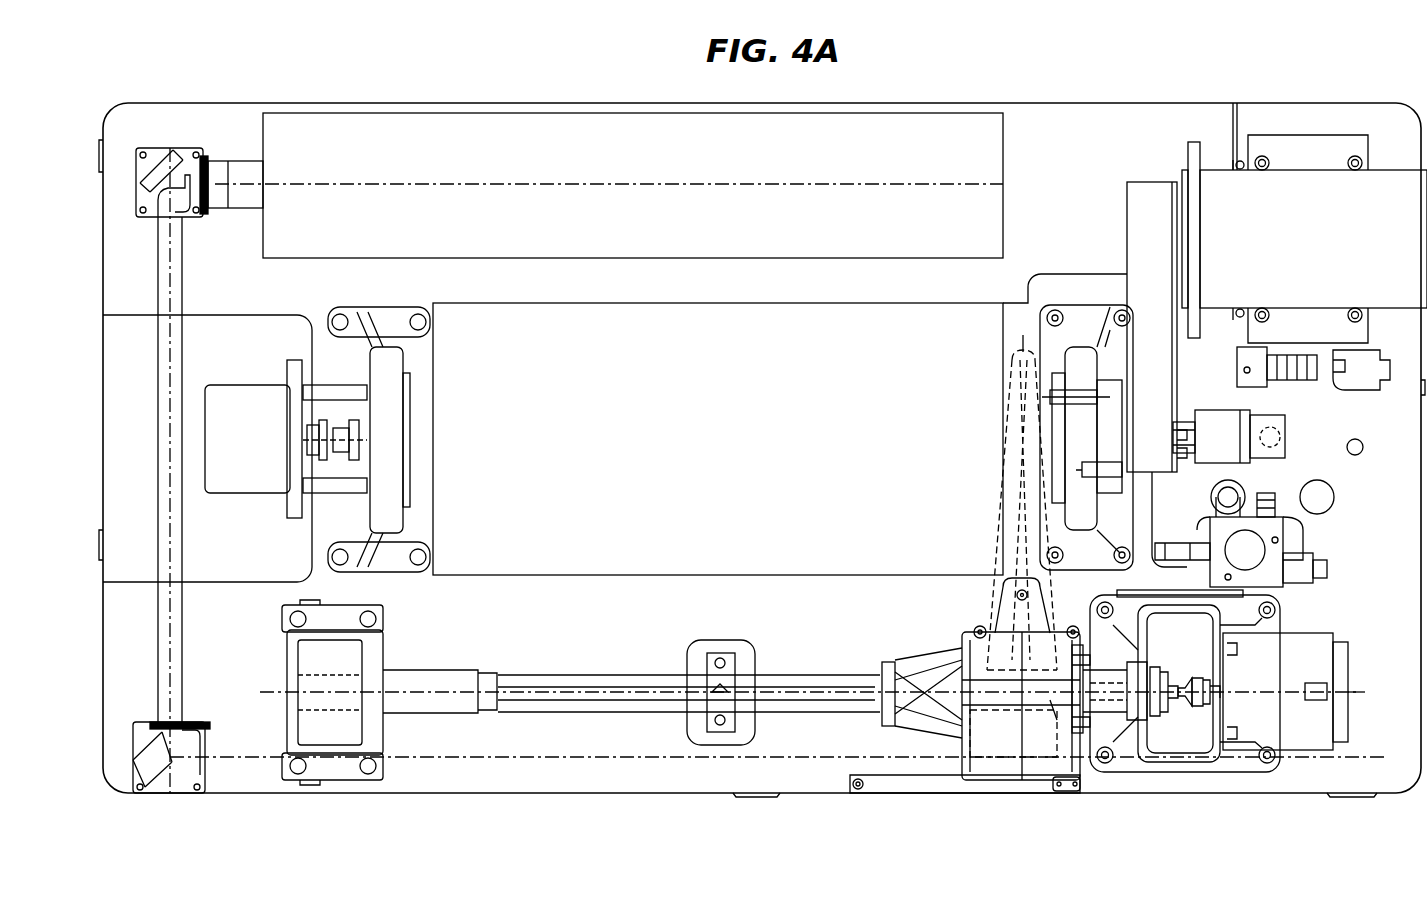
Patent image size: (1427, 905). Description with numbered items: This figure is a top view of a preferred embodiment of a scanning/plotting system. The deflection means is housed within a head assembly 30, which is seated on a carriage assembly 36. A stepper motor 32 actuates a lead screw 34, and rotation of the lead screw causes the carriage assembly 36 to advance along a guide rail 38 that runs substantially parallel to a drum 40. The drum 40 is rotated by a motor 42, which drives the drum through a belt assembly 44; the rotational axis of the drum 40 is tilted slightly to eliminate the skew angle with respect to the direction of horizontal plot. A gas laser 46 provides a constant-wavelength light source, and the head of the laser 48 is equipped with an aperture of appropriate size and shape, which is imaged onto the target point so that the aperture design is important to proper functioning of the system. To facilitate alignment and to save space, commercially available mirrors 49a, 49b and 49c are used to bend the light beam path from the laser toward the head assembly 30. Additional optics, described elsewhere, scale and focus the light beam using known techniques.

The head assembly 30 is at (1006, 806).
The stepper motor 32 is at (1308, 674).
The lead screw 34 is at (498, 694).
The carriage assembly 36 is at (880, 718).
The guide rail 38 is at (595, 705).
The drum 40 is at (748, 385).
The motor 42 is at (1331, 217).
The belt assembly 44 is at (1165, 364).
The gas laser 46 is at (645, 234).
The head of the laser 48 is at (247, 165).
The mirror 49a is at (168, 172).
The mirror 49b is at (190, 760).
The mirror 49c is at (1020, 752).